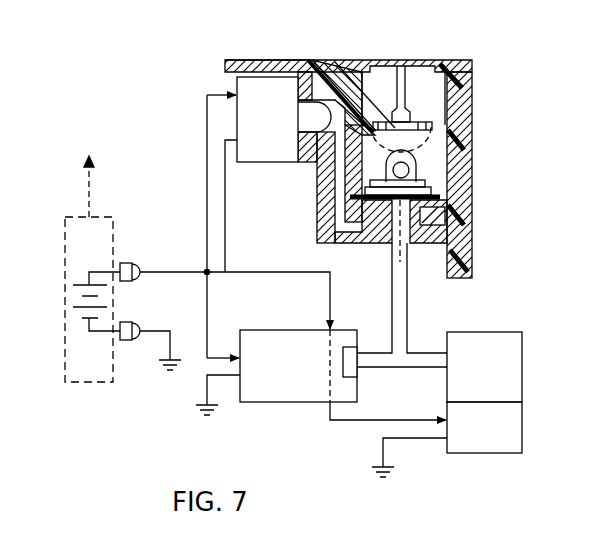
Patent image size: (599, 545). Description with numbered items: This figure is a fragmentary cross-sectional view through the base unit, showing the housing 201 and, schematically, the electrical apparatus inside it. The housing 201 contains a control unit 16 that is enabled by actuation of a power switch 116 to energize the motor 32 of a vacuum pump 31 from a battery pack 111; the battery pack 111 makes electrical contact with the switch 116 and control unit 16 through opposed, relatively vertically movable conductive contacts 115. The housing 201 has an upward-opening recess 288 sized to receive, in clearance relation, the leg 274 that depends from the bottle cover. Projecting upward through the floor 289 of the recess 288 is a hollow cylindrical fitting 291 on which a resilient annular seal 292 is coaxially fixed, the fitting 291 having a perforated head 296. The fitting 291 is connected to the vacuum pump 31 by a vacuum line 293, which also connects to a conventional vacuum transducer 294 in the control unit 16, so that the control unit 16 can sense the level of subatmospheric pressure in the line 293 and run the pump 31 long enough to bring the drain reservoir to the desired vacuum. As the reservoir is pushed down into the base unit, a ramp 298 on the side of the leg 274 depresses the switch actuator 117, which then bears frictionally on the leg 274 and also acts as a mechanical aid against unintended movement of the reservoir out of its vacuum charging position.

The control unit 16 is at (265, 403).
The vacuum pump 31 is at (510, 366).
The motor 32 is at (510, 436).
The battery pack 111 is at (64, 246).
The conductive contacts 115 is at (133, 263).
The power switch 116 is at (279, 92).
The switch actuator 117 is at (347, 110).
The housing 201 is at (473, 108).
The leg 274 is at (338, 117).
The recess 288 is at (452, 95).
The floor 289 is at (440, 220).
The fitting 291 is at (425, 194).
The annular seal 292 is at (420, 183).
The vacuum line 293 is at (412, 268).
The vacuum transducer 294 is at (352, 349).
The perforated head 296 is at (420, 155).
The ramp 298 is at (322, 165).